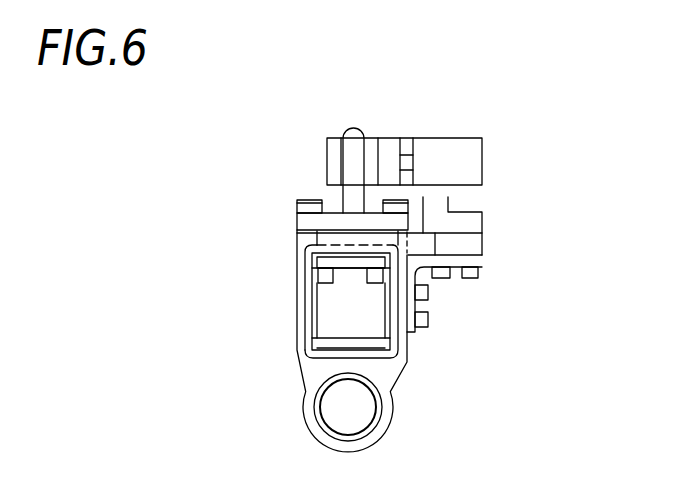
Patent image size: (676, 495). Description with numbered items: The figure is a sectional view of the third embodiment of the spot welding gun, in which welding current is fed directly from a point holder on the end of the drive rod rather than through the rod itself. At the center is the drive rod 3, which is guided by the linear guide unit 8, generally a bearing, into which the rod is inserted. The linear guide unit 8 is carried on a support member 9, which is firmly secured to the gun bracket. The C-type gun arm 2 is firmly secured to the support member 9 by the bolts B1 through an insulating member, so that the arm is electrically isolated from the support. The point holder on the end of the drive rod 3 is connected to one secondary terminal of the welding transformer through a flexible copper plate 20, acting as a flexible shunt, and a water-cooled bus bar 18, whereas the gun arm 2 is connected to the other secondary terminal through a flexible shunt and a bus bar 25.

The gun arm 2 is at (355, 158).
The bus bar 25 is at (458, 162).
The bolts B1 is at (305, 207).
The water-cooled bus bar 18 is at (470, 220).
The flexible copper plate 20 is at (338, 302).
The support member 9 is at (402, 365).
The drive rod 3 is at (337, 412).
The linear guide unit 8 is at (383, 427).